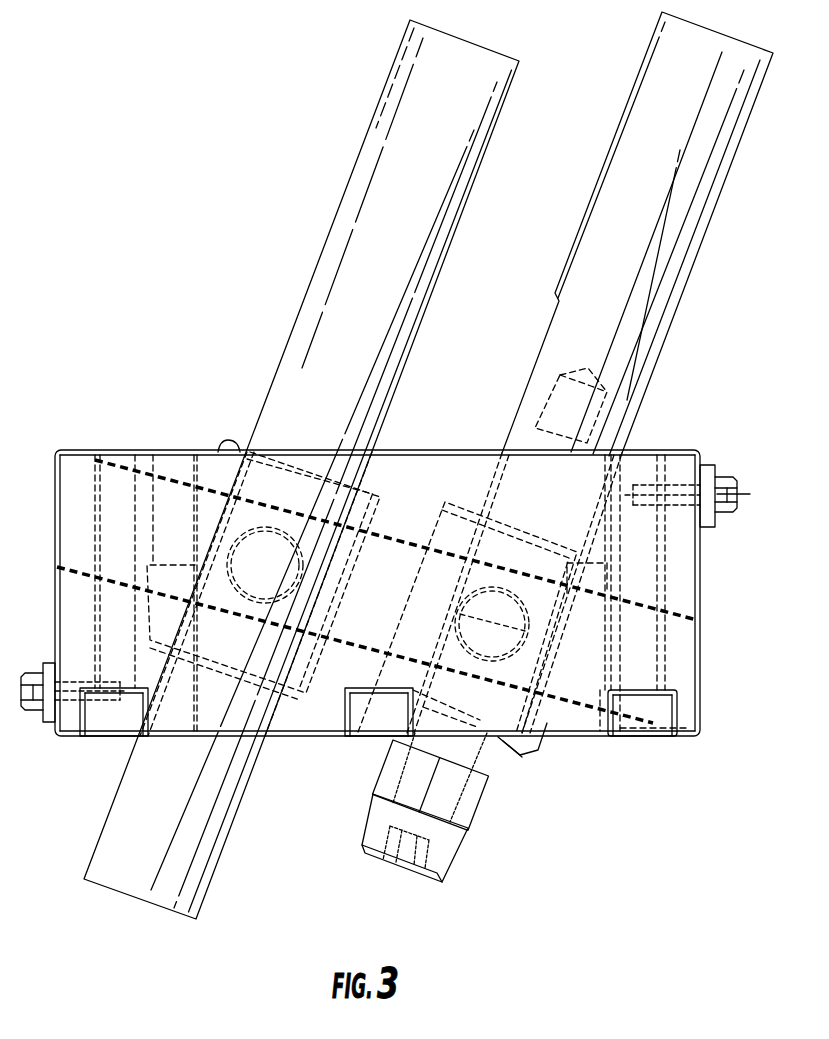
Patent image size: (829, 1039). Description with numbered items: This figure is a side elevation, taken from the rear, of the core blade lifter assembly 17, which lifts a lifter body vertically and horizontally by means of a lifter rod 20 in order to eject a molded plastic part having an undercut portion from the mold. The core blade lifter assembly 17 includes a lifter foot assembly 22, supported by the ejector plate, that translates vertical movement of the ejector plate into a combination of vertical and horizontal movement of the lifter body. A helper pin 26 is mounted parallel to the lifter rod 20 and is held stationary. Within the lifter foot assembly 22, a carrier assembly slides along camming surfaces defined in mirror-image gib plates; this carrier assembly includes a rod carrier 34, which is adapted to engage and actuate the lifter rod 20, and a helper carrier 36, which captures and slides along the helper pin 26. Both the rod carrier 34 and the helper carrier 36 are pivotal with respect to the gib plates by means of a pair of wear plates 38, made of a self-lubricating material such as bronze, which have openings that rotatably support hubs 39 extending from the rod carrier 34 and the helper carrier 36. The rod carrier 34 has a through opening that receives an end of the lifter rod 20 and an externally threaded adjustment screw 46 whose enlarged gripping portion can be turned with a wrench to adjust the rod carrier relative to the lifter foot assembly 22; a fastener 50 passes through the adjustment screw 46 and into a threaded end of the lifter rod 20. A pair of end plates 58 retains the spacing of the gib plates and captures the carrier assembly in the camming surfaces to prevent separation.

The core blade lifter assembly 17 is at (188, 215).
The lifter rod 20 is at (673, 318).
The lifter foot assembly 22 is at (676, 451).
The helper pin 26 is at (312, 281).
The rod carrier 34 is at (538, 751).
The helper carrier 36 is at (228, 440).
The wear plates 38 is at (425, 465).
The hubs 39 is at (275, 455).
The adjustment screw 46 is at (482, 801).
The fastener 50 is at (450, 858).
The end plates 58 is at (52, 663).